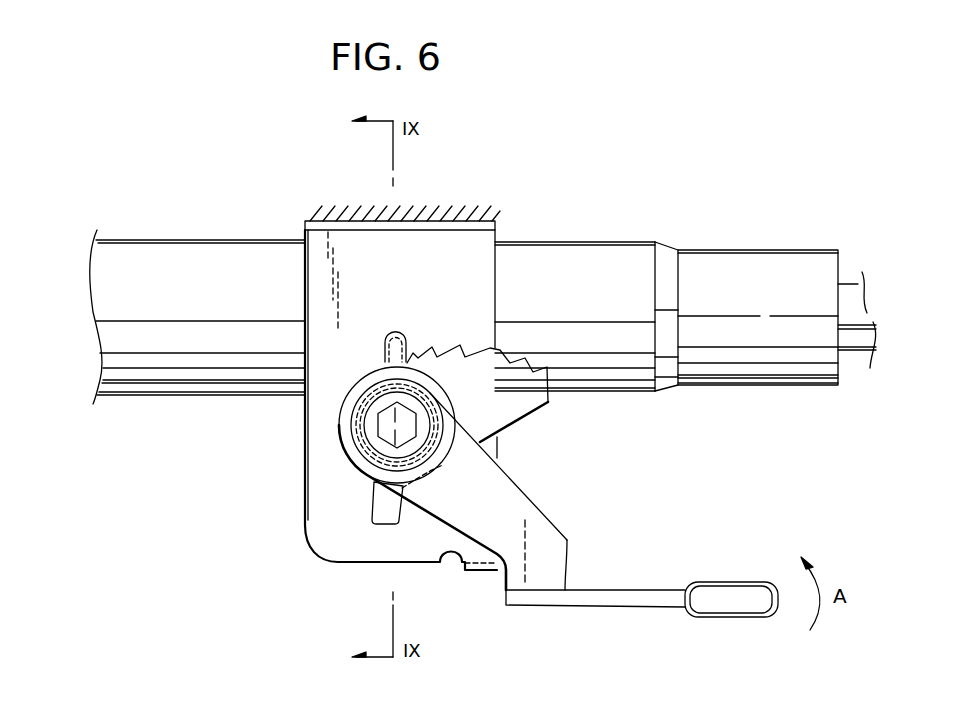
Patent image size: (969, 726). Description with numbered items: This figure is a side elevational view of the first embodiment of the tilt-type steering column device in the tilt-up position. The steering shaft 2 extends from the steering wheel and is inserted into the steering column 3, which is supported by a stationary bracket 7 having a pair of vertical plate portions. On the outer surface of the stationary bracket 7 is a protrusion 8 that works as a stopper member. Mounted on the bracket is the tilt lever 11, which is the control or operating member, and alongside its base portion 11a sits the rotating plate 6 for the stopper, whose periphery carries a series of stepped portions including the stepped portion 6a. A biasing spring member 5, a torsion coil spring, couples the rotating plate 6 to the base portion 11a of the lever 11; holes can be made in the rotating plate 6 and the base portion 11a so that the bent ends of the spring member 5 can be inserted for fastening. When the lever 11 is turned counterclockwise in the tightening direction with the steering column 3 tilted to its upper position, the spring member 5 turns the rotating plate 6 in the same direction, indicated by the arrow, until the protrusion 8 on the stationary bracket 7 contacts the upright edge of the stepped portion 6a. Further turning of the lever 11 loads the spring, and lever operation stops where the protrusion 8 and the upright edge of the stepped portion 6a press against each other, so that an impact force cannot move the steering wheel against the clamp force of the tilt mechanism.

The steering shaft 2 is at (850, 288).
The steering column 3 is at (757, 258).
The biasing spring member 5 is at (425, 392).
The rotating plate 6 is at (511, 414).
The stepped portion 6a is at (412, 357).
The stationary bracket 7 is at (495, 233).
The protrusion 8 is at (395, 333).
The lever 11 is at (558, 492).
The base portion 11a is at (553, 538).